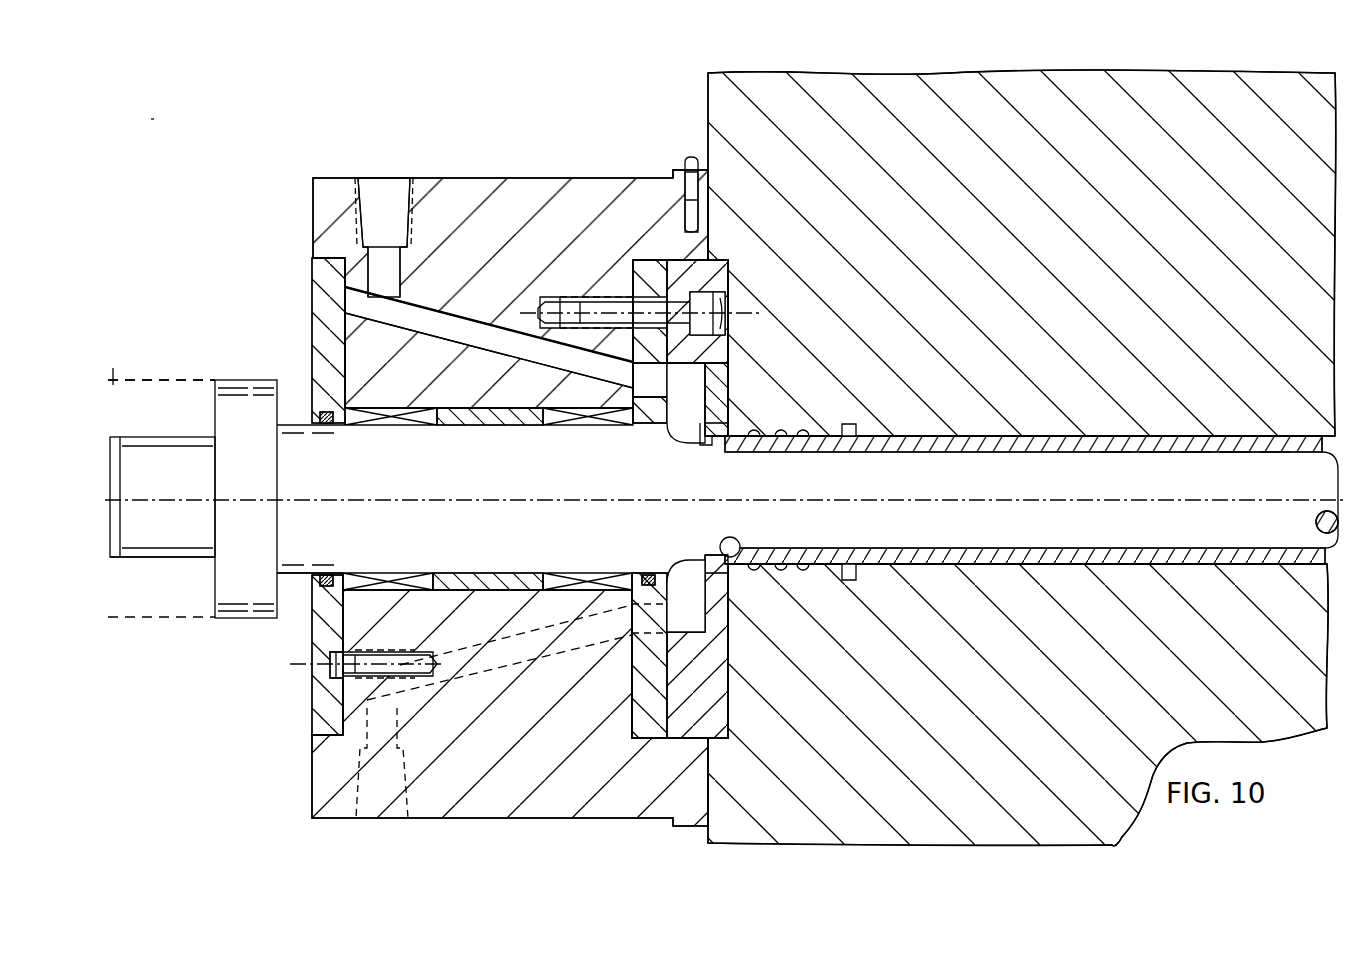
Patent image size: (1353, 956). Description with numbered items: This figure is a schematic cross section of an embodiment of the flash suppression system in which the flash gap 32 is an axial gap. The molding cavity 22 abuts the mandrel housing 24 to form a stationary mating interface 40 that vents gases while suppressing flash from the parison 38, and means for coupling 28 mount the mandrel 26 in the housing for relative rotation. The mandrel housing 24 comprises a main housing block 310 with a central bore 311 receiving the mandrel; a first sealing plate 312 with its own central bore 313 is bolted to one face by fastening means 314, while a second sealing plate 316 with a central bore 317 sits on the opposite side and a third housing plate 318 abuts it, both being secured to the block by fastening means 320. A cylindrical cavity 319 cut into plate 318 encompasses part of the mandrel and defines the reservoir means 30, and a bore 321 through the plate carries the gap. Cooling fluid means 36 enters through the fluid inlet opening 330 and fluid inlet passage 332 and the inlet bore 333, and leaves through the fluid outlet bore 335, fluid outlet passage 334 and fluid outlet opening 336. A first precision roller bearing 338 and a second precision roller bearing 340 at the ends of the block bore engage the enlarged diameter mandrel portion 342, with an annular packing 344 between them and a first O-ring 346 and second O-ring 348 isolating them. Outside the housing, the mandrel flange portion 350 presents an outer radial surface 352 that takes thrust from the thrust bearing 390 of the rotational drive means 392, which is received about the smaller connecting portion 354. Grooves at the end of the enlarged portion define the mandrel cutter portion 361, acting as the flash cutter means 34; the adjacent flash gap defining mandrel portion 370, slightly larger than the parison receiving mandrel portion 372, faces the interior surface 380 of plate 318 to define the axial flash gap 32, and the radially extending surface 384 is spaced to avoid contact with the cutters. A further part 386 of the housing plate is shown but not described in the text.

The molding cavity 22 is at (1132, 818).
The mandrel housing 24 is at (628, 162).
The mandrel 26 is at (1067, 474).
The means for coupling 28 is at (377, 412).
The reservoir means 30 is at (712, 363).
The flash gap 32 is at (740, 436).
The flash cutter means 34 is at (728, 408).
The cooling fluid means 36 is at (694, 378).
The parison 38 is at (932, 436).
The stationary mating interface 40 is at (713, 213).
The main housing block 310 is at (536, 192).
The central bore 311 is at (450, 426).
The first sealing plate 312 is at (312, 294).
The central bore 313 is at (326, 425).
The fastening means 314 is at (320, 680).
The second sealing plate 316 is at (648, 262).
The central bore 317 is at (638, 428).
The third housing plate 318 is at (710, 264).
The cylindrical cavity 319 is at (747, 344).
The fastening means 320 is at (720, 302).
The bore 321 is at (737, 564).
The fluid inlet opening 330 is at (387, 186).
The fluid inlet passage 332 is at (453, 323).
The inlet bore 333 is at (640, 380).
The fluid outlet passage 334 is at (505, 652).
The fluid outlet bore 335 is at (650, 618).
The fluid outlet opening 336 is at (380, 805).
The first precision roller bearing 338 is at (388, 573).
The second precision roller bearing 340 is at (586, 572).
The enlarged diameter mandrel portion 342 is at (293, 577).
The annular packing 344 is at (489, 572).
The first O-ring 346 is at (330, 574).
The second O-ring 348 is at (651, 574).
The mandrel flange portion 350 is at (272, 362).
The outer radial surface 352 is at (215, 428).
The connecting portion 354 is at (175, 560).
The mandrel cutter portion 361 is at (763, 404).
The flash gap defining mandrel portion 370 is at (703, 434).
The parison receiving mandrel portion 372 is at (1007, 436).
The interior surface 380 is at (1025, 590).
The radially extending surface 384 is at (737, 660).
The spacer 386 is at (738, 600).
The thrust bearing 390 is at (117, 378).
The rotational drive means 392 is at (163, 378).